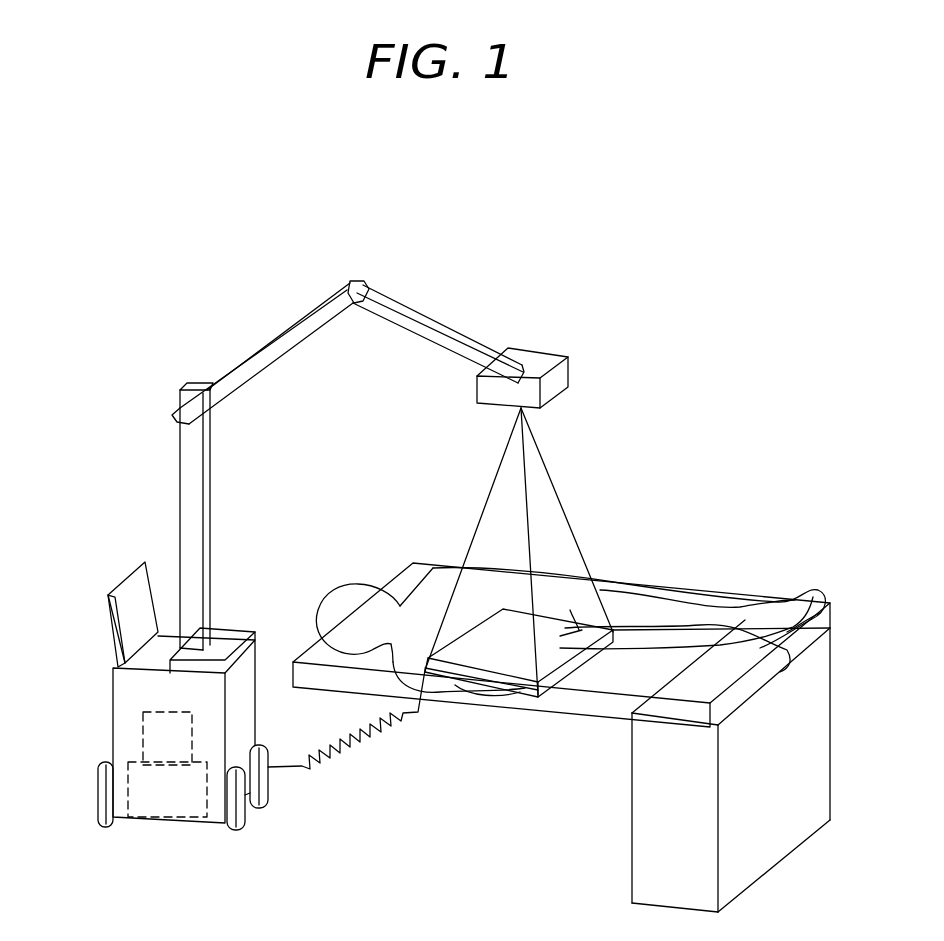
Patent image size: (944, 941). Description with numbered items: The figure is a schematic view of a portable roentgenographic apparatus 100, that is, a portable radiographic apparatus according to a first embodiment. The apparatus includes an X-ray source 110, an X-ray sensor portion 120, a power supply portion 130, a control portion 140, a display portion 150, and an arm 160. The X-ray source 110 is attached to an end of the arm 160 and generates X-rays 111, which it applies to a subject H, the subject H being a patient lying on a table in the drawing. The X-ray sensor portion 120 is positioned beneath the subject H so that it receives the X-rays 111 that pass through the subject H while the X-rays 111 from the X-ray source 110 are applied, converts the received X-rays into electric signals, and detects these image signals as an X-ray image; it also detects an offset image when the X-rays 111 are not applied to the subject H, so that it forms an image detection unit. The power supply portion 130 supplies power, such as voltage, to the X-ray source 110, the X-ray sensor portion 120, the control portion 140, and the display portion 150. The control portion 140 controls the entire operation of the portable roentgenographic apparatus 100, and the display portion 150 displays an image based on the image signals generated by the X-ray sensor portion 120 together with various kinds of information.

The portable roentgenographic apparatus 100 is at (418, 204).
The X-ray source 110 is at (548, 362).
The X-rays 111 is at (548, 510).
The X-ray sensor portion 120 is at (485, 688).
The power supply portion 130 is at (175, 798).
The control portion 140 is at (158, 742).
The display portion 150 is at (112, 630).
The arm 160 is at (180, 481).
The subject H is at (425, 595).